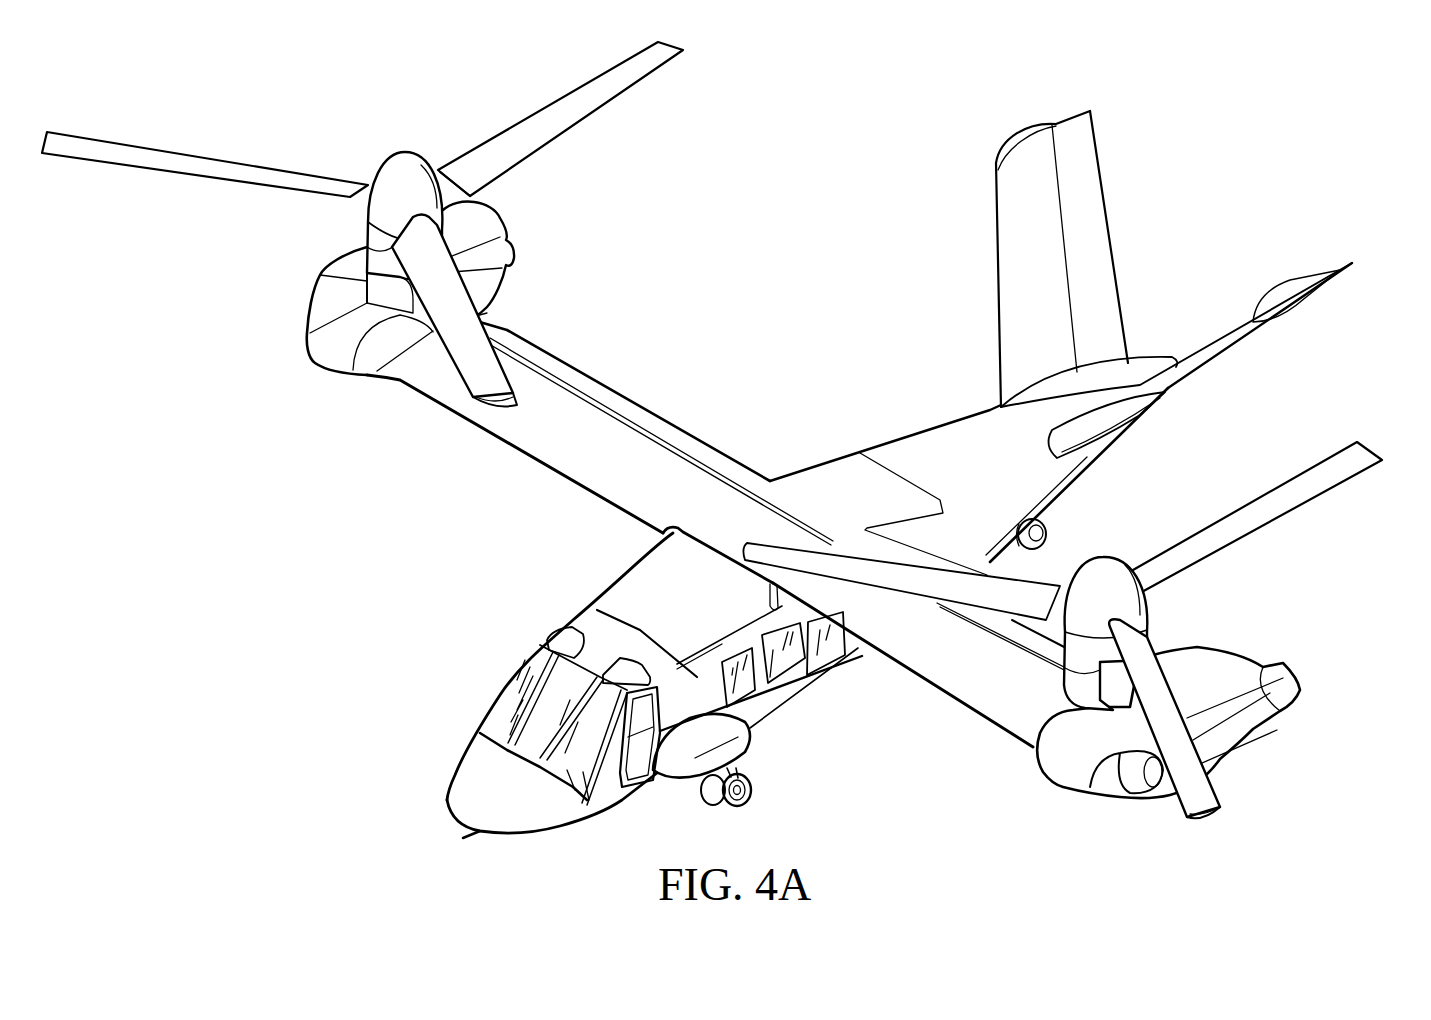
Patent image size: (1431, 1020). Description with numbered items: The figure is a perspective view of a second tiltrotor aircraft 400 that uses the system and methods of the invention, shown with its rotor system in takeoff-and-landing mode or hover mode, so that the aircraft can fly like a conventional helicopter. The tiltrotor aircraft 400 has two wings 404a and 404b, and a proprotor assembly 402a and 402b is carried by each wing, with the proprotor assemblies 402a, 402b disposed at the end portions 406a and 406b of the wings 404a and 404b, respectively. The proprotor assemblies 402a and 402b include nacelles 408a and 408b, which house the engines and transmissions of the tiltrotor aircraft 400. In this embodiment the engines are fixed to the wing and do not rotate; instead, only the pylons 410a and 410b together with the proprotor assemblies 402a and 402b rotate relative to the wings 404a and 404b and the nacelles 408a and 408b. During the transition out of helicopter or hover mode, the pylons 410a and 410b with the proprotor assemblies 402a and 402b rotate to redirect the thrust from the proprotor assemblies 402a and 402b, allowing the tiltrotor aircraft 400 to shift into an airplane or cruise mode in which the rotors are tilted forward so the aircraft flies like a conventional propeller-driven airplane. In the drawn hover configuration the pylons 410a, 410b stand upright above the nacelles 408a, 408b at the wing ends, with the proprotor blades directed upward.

The tiltrotor aircraft 400 is at (1199, 85).
The proprotor assembly 402a is at (547, 102).
The proprotor assembly 402b is at (1335, 488).
The wing 404a is at (540, 458).
The wing 404b is at (933, 682).
The end portion 406a is at (548, 233).
The end portion 406b is at (1322, 662).
The nacelle 408a is at (323, 348).
The nacelle 408b is at (1243, 733).
The pylon 410a is at (370, 238).
The pylon 410b is at (1058, 660).